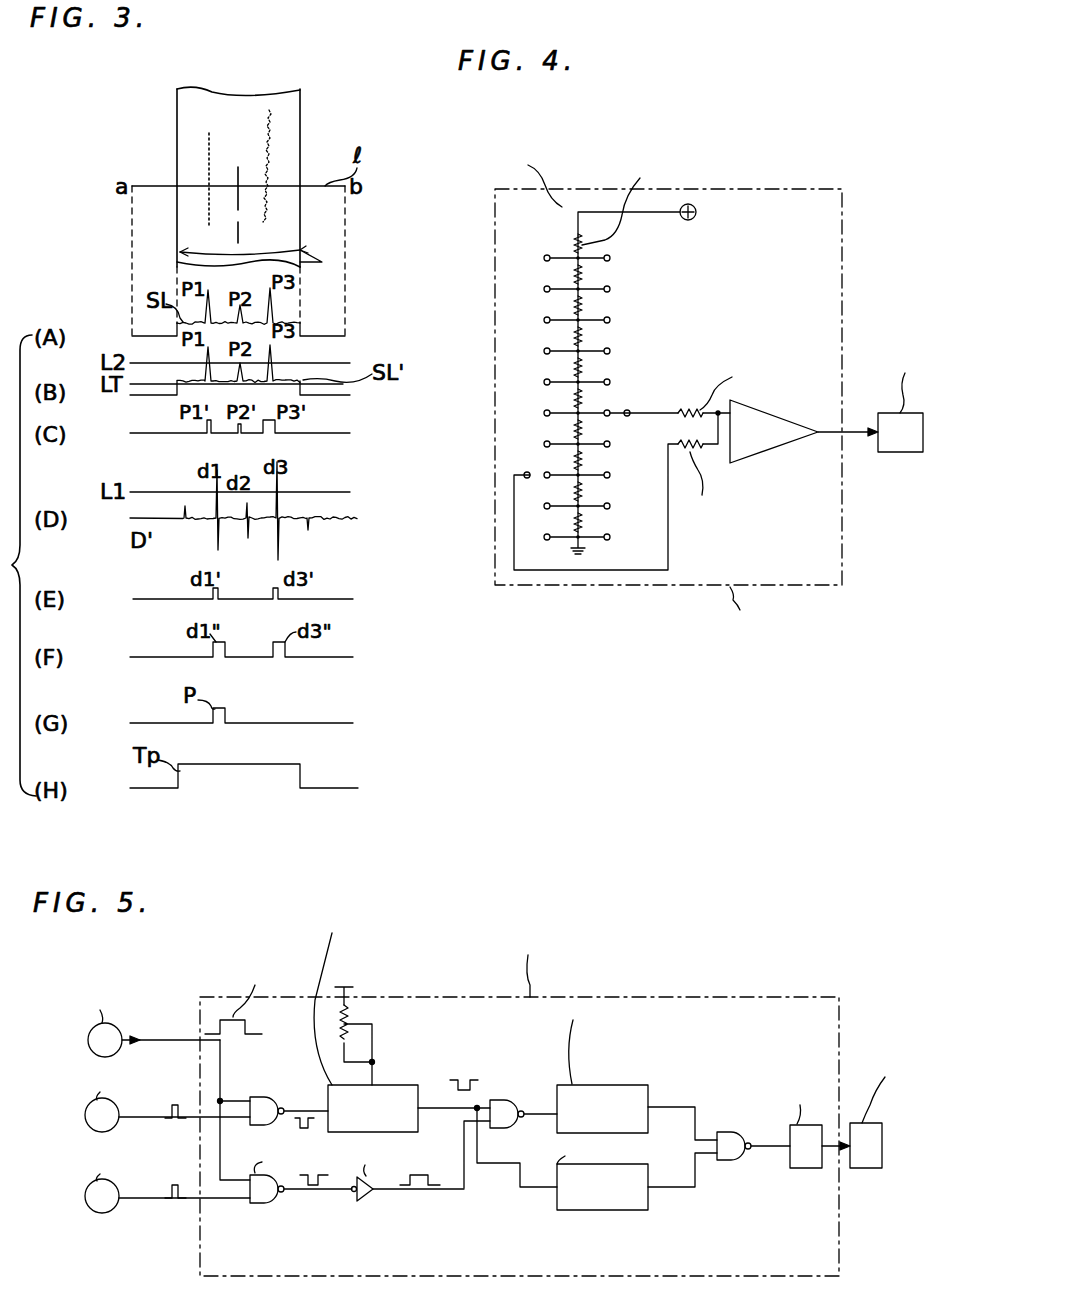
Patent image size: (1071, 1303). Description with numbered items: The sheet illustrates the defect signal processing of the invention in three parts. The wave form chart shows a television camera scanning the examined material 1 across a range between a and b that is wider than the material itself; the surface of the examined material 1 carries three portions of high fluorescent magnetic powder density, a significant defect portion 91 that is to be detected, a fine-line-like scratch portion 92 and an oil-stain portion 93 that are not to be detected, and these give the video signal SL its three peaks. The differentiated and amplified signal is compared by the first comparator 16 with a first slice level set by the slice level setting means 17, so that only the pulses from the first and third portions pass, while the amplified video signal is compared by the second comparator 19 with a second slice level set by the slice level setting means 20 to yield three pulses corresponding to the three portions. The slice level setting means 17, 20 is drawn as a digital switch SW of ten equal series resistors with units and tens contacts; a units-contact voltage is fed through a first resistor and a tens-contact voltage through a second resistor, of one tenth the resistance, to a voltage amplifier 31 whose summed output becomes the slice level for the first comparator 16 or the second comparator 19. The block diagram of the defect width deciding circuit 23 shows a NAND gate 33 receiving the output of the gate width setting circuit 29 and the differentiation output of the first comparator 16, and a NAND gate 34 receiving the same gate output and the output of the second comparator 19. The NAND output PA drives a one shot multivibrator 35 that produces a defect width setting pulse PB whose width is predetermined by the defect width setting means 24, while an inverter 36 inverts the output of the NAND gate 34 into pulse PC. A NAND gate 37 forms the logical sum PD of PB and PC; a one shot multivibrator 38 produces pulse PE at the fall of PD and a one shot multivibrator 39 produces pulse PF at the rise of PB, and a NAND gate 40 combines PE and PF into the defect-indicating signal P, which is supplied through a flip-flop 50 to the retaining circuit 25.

In FIG. 3, the examined material 1 is at (293, 103).
In FIG. 3, the portion having high density of fluorescent magnetic powder 91 is at (209, 135).
In FIG. 3, the fine-line-like scratch portion 92 is at (238, 167).
In FIG. 3, the oil stain portion 93 is at (269, 166).
In FIG. 4, the slice level setting means 17 is at (666, 398).
In FIG. 4, the slice level setting means 20 is at (666, 398).
In FIG. 4, the voltage amplifier 31 is at (778, 412).
In FIG. 4, the first comparator 16 is at (881, 426).
In FIG. 5, the first comparator 16 is at (167, 1115).
In FIG. 4, the second comparator 19 is at (890, 452).
In FIG. 5, the second comparator 19 is at (167, 1196).
In FIG. 5, the defect width deciding circuit 23 is at (718, 997).
In FIG. 5, the gate width setting circuit 29 is at (154, 1040).
In FIG. 5, the NAND gate 33 is at (256, 1096).
In FIG. 5, the NAND gate 34 is at (268, 1205).
In FIG. 5, the one shot multivibrator 35 is at (390, 1084).
In FIG. 5, the defect width setting means 24 is at (350, 1012).
In FIG. 5, the inverter 36 is at (362, 1202).
In FIG. 5, the NAND gate 37 is at (506, 1099).
In FIG. 5, the one shot multivibrator 38 is at (595, 1084).
In FIG. 5, the one shot multivibrator 39 is at (597, 1211).
In FIG. 5, the NAND gate 40 is at (735, 1131).
In FIG. 5, the flip-flop 50 is at (800, 1170).
In FIG. 5, the retaining circuit 25 is at (865, 1170).